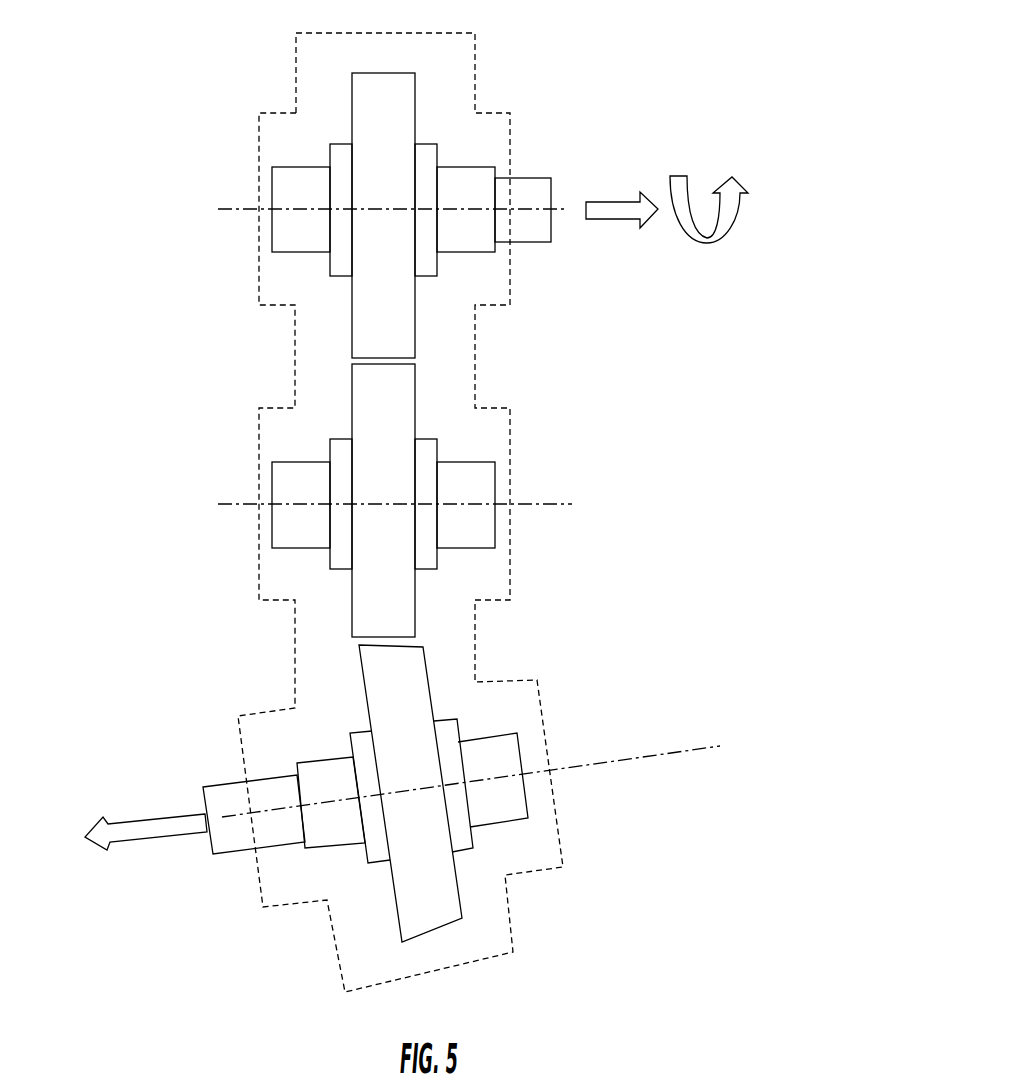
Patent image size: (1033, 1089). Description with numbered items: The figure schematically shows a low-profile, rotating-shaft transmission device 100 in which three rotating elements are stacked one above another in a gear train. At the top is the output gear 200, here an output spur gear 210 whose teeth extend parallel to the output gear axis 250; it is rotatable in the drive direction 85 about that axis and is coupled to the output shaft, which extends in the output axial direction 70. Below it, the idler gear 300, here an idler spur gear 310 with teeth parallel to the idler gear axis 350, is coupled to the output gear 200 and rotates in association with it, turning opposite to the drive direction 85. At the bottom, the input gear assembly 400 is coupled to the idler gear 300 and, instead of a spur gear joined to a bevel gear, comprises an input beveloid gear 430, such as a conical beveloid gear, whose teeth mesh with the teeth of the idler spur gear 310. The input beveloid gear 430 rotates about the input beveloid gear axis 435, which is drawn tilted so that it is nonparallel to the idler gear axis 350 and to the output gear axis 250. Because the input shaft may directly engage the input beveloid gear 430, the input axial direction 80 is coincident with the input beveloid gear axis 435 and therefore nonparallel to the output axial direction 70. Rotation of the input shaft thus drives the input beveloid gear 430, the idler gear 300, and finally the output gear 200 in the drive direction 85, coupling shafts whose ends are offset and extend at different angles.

The low-profile, rotating-shaft transmission device 100 is at (560, 130).
The output gear 200 is at (323, 287).
The output spur gear 210 is at (377, 313).
The output gear axis 250 is at (228, 214).
The output axial direction 70 is at (616, 224).
The drive direction 85 is at (742, 222).
The idler gear 300 is at (328, 587).
The idler spur gear 310 is at (395, 552).
The idler gear axis 350 is at (525, 509).
The input gear assembly 400 is at (377, 913).
The input beveloid gear 430 is at (436, 823).
The input beveloid gear axis 435 is at (588, 770).
The input axial direction 80 is at (123, 845).